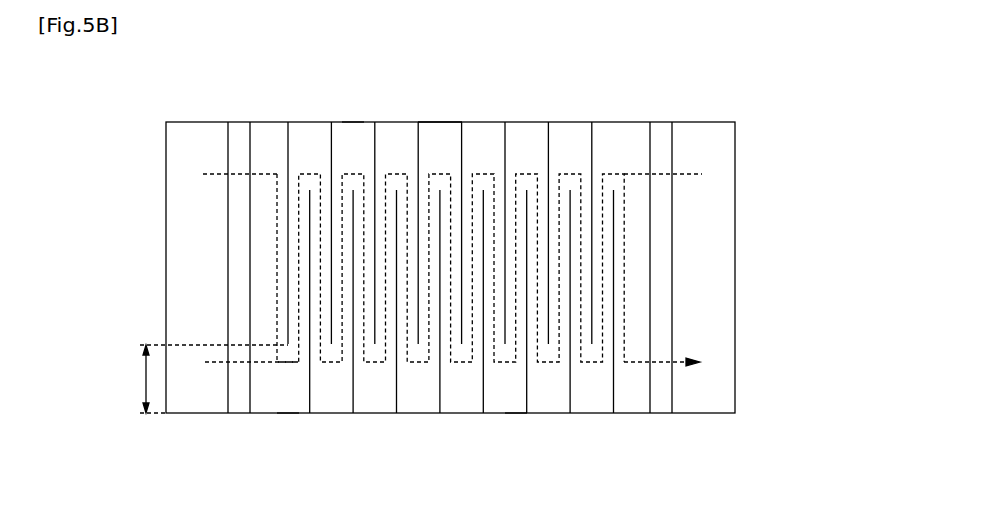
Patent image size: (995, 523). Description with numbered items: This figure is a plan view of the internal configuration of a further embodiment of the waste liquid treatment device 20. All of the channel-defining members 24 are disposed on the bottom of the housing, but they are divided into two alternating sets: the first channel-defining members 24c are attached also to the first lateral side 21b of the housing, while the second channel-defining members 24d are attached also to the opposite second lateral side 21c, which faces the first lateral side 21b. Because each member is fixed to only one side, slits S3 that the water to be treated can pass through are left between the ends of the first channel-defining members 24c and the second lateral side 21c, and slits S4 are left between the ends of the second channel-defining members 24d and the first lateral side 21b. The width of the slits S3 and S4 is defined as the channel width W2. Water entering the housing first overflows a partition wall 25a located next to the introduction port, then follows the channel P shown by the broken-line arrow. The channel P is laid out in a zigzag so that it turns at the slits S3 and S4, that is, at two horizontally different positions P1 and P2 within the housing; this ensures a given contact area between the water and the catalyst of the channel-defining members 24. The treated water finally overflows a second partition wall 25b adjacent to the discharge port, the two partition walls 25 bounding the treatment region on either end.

The waste liquid treatment device 20 is at (764, 161).
The partition wall 25 is at (456, 267).
The partition wall 25a is at (228, 235).
The partition wall 25b is at (663, 268).
The channel-defining members 24 is at (492, 266).
The first channel-defining members 24c is at (288, 147).
The second channel-defining members 24d is at (613, 390).
The first lateral side 21b is at (438, 123).
The second lateral side 21c is at (510, 413).
The channel P is at (527, 172).
The turning position P1 is at (437, 362).
The turning position P2 is at (437, 174).
The channel width W2 is at (200, 379).
The slits S3 is at (289, 388).
The slits S4 is at (350, 150).